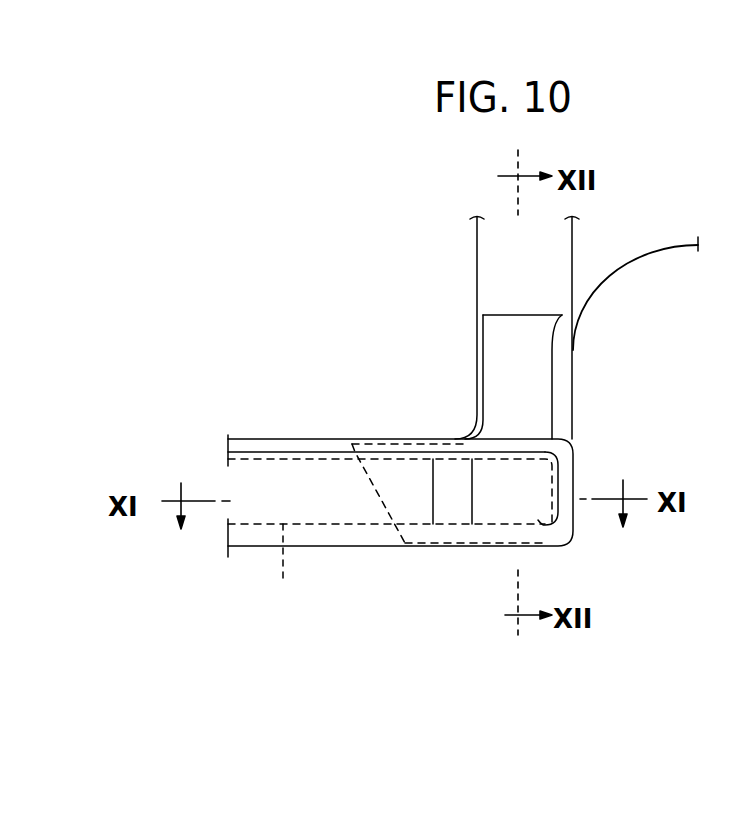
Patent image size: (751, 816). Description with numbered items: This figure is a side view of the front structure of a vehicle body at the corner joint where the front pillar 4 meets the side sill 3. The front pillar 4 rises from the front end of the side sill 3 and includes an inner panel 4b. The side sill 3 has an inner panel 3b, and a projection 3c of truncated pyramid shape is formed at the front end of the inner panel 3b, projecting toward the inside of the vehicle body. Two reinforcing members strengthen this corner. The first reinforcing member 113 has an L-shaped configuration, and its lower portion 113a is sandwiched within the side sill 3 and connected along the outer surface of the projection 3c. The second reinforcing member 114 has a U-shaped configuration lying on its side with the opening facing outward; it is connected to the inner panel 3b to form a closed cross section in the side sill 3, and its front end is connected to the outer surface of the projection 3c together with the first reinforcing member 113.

The side sill 3 is at (254, 439).
The inner panel 3b is at (294, 467).
The projection 3c is at (540, 478).
The front pillar 4 is at (477, 259).
The inner panel 4b is at (560, 287).
The first reinforcing member 113 is at (540, 380).
The lower portion 113a is at (418, 512).
The second reinforcing member 114 is at (294, 569).